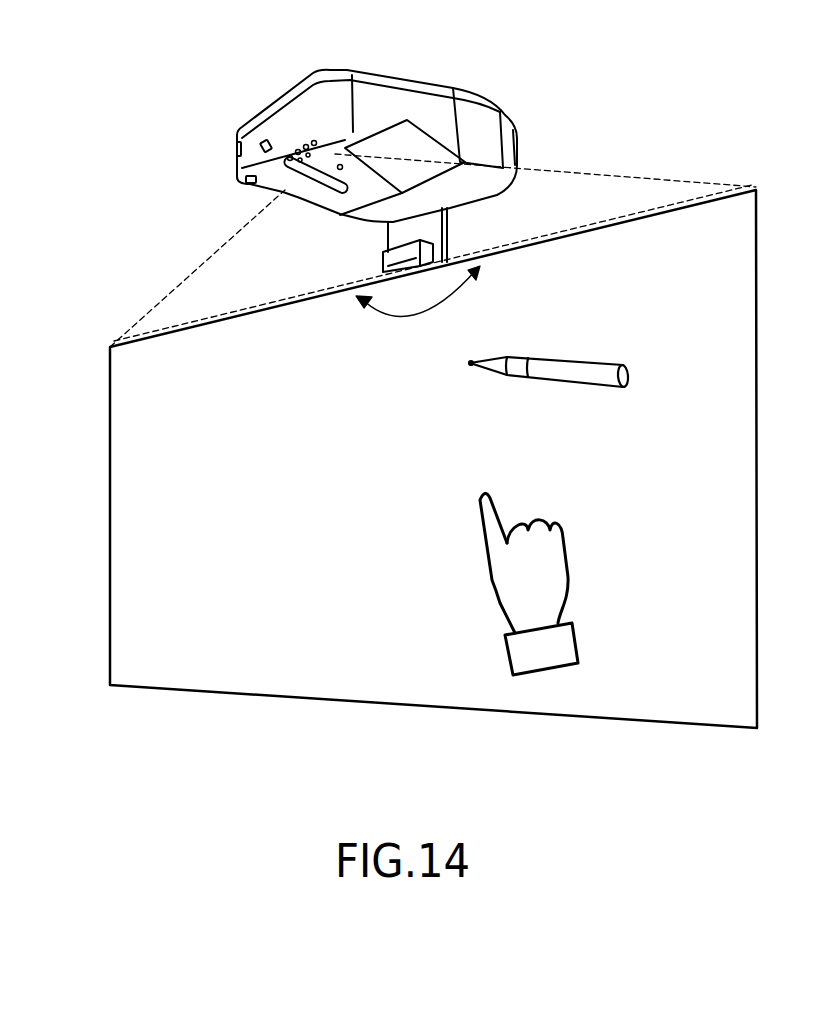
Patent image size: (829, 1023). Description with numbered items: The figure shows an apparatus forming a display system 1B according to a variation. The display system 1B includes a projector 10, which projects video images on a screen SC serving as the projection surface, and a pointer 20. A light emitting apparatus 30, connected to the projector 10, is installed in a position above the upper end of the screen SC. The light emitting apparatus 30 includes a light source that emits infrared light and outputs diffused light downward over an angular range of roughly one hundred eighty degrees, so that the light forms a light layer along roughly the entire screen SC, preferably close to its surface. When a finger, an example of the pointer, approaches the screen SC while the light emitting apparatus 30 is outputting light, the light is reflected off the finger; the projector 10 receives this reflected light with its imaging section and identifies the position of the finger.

The display system 1B is at (182, 138).
The projector 10 is at (410, 80).
The pointer 20 is at (550, 366).
The light emitting apparatus 30 is at (383, 253).
The screen SC is at (108, 462).